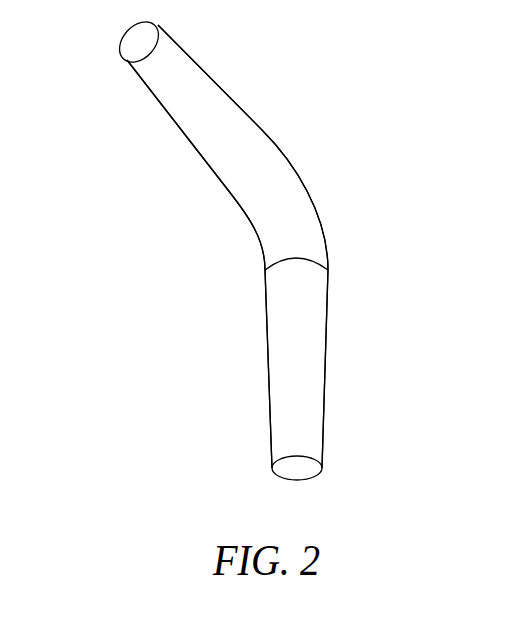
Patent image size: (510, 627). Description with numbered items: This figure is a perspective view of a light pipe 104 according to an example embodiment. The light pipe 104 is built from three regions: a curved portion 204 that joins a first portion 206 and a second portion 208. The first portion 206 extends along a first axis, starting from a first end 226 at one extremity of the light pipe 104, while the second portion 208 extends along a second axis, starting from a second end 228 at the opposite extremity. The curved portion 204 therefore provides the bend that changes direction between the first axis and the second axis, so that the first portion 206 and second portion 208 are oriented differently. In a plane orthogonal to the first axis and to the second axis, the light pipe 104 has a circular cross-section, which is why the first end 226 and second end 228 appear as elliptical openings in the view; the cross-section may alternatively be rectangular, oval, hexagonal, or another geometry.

The light pipe 104 is at (311, 47).
The curved portion 204 is at (318, 203).
The first portion 206 is at (326, 370).
The second portion 208 is at (185, 140).
The first end 226 is at (295, 468).
The second end 228 is at (138, 42).